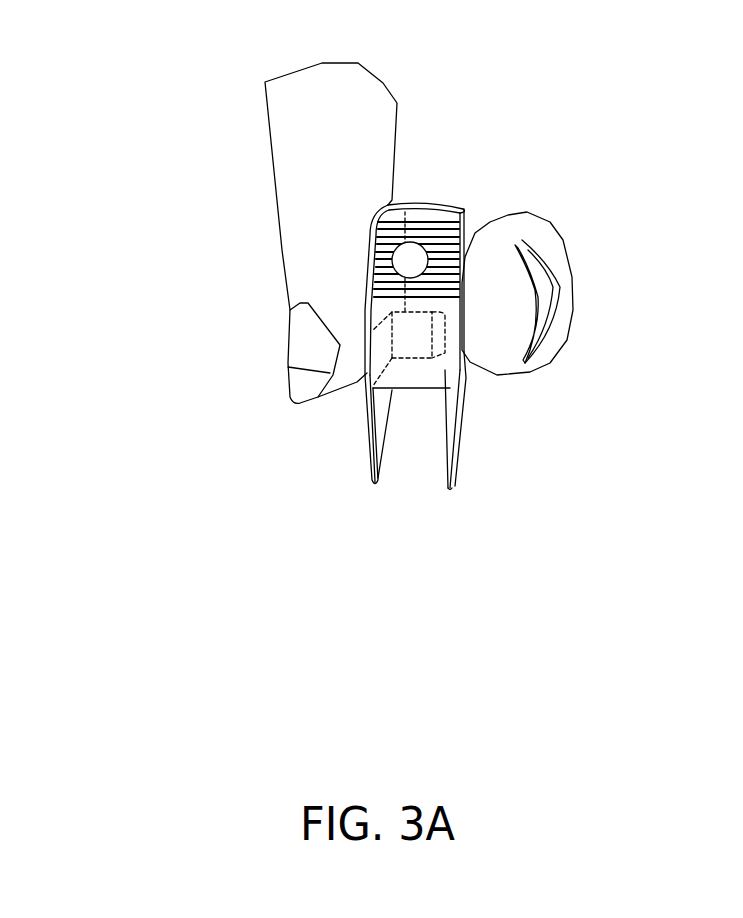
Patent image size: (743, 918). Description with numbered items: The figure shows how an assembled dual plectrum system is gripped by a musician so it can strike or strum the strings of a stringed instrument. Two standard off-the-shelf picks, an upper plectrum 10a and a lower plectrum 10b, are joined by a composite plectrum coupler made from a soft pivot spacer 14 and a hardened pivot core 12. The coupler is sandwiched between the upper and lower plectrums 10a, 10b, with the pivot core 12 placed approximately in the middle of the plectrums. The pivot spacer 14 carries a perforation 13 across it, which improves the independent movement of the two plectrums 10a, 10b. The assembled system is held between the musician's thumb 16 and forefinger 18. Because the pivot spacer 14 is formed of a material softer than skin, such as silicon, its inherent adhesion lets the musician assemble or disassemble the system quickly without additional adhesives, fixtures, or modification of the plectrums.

The upper plectrum 10a is at (462, 388).
The lower plectrum 10b is at (380, 435).
The pivot core 12 is at (415, 342).
The perforation 13 is at (410, 262).
The pivot spacer 14 is at (422, 212).
The thumb 16 is at (543, 238).
The forefinger 18 is at (297, 265).